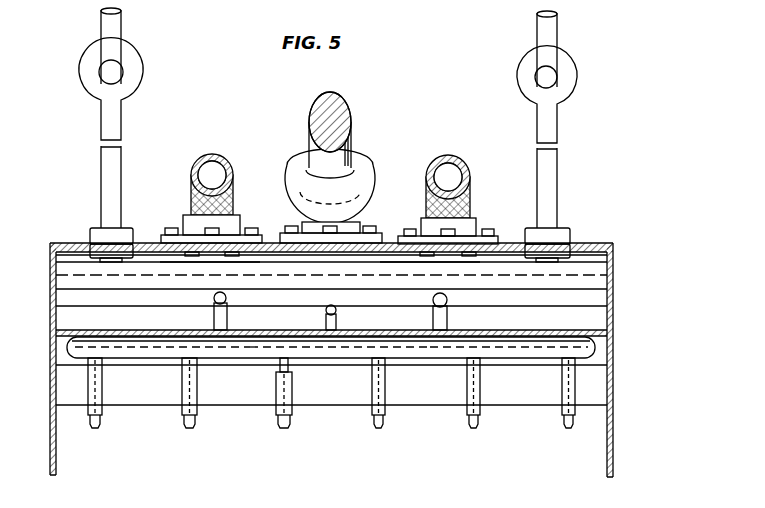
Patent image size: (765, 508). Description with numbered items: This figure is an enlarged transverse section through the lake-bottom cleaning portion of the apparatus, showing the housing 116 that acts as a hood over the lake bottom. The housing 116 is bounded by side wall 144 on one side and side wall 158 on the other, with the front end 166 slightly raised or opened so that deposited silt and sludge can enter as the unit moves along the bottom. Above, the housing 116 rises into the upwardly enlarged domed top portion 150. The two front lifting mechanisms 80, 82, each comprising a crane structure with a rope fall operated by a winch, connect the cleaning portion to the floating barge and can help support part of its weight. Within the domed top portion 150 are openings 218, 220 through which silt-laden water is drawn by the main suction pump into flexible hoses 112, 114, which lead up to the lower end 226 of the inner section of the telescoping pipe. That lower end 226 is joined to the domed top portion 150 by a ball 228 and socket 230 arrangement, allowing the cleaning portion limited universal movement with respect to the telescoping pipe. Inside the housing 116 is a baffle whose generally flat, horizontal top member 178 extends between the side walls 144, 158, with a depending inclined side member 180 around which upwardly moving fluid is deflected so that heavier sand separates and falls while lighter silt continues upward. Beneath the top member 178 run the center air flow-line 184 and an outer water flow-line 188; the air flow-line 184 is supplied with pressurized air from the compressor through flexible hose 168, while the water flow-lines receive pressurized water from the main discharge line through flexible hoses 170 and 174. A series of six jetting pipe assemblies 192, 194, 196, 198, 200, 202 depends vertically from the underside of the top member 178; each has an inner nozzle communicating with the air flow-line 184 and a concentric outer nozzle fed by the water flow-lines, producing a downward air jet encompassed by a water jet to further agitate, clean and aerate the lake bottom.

The lifting mechanism 80 is at (102, 38).
The lifting mechanism 82 is at (558, 60).
The flexible hose 112 is at (199, 160).
The flexible hose 114 is at (462, 163).
The housing 116 is at (613, 320).
The side wall 144 is at (50, 297).
The domed top portion 150 is at (585, 245).
The side wall 158 is at (613, 302).
The front end opening 166 is at (56, 439).
The flexible hose 168 is at (334, 306).
The flexible hose 170 is at (213, 298).
The flexible hose 174 is at (449, 304).
The top member of baffle 178 is at (258, 330).
The side member of baffle 180 is at (229, 360).
The air flow-line 184 is at (440, 350).
The water flow-line 188 is at (532, 350).
The jetting pipe assembly 192 is at (102, 414).
The jetting pipe assembly 194 is at (197, 412).
The jetting pipe assembly 196 is at (292, 414).
The jetting pipe assembly 198 is at (385, 415).
The jetting pipe assembly 200 is at (480, 415).
The jetting pipe assembly 202 is at (575, 415).
The opening 218 is at (221, 260).
The opening 220 is at (434, 246).
The lower end of inner pipe section 226 is at (337, 112).
The ball 228 is at (302, 163).
The socket 230 is at (358, 155).